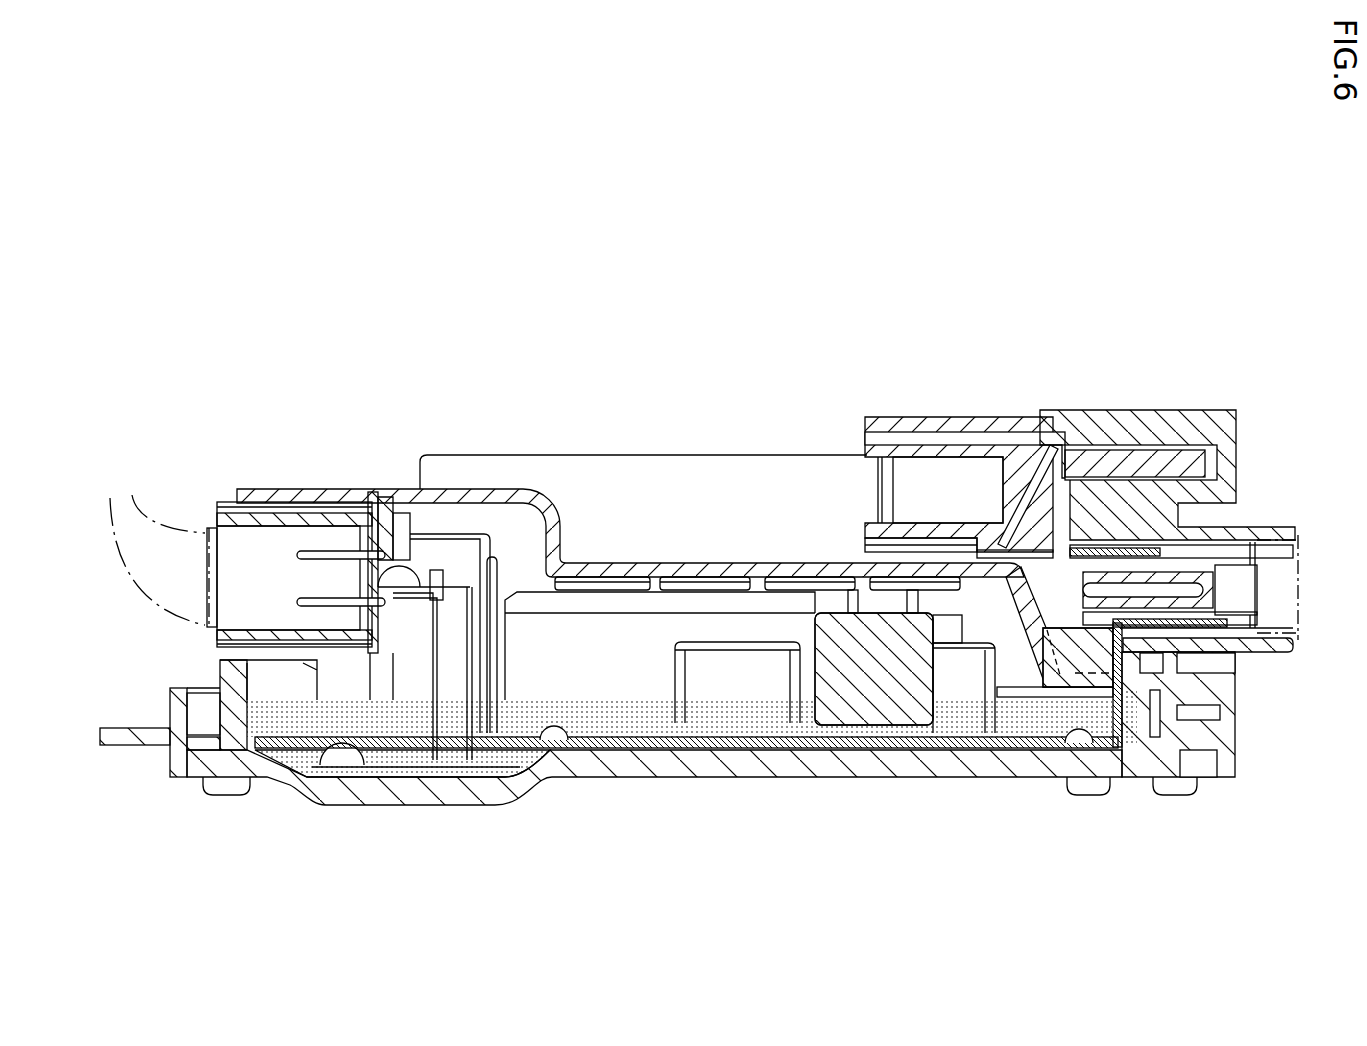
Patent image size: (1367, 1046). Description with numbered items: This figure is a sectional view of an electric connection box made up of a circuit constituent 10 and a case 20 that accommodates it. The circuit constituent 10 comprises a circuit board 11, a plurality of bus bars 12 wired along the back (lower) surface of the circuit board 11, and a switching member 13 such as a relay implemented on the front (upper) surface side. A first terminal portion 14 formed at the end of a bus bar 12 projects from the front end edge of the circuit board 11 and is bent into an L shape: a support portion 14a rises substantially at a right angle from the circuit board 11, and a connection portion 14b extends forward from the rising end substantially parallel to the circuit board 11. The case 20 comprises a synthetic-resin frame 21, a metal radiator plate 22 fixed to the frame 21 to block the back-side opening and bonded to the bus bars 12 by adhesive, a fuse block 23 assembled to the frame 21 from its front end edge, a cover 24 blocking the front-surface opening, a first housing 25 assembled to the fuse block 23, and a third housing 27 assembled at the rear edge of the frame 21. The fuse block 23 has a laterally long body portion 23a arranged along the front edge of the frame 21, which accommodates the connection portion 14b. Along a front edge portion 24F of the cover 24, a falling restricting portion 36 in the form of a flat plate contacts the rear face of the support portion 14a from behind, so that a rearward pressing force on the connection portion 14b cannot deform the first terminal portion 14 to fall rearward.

The circuit constituent 10 is at (624, 648).
The circuit board 11 is at (558, 748).
The bus bar 12 is at (1064, 748).
The switching member 13 is at (752, 675).
The first terminal portion 14 is at (1160, 760).
The support portion 14a is at (1117, 748).
The connection portion 14b is at (1173, 650).
The case 20 is at (1076, 474).
The frame 21 is at (237, 704).
The radiator plate 22 is at (673, 763).
The fuse block 23 is at (1169, 474).
The body portion 23a is at (1170, 425).
The cover 24 is at (657, 511).
The front edge portion 24F is at (1049, 593).
The first housing 25 is at (960, 417).
The third housing 27 is at (292, 517).
The falling restricting portion 36 is at (1075, 653).